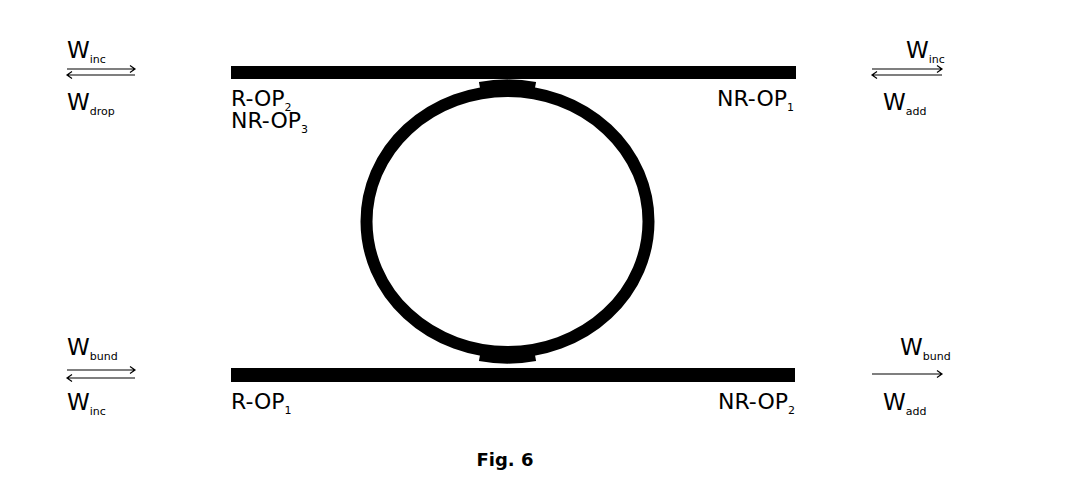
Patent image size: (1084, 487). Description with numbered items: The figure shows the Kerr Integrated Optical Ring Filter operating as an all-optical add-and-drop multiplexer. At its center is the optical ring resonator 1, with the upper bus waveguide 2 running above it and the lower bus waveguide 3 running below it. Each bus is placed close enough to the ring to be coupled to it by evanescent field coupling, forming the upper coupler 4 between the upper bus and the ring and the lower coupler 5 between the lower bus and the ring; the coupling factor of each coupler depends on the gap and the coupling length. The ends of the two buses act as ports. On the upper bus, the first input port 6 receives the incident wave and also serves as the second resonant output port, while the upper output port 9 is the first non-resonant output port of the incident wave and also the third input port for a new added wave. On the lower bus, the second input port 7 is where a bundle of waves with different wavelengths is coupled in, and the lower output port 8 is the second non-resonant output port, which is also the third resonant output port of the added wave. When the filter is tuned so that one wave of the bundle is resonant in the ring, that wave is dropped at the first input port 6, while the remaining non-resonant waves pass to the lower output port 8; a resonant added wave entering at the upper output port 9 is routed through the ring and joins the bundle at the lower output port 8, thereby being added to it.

The optical ring resonator 1 is at (671, 200).
The upper bus waveguide 2 is at (646, 57).
The lower bus waveguide 3 is at (643, 391).
The upper coupler 4 is at (509, 112).
The lower coupler 5 is at (509, 328).
The input port IP1 of the upper bus 6 is at (212, 62).
The input port IP2 of the lower bus 7 is at (212, 361).
The output port of the lower bus 8 is at (806, 361).
The output port of the upper bus 9 is at (806, 61).